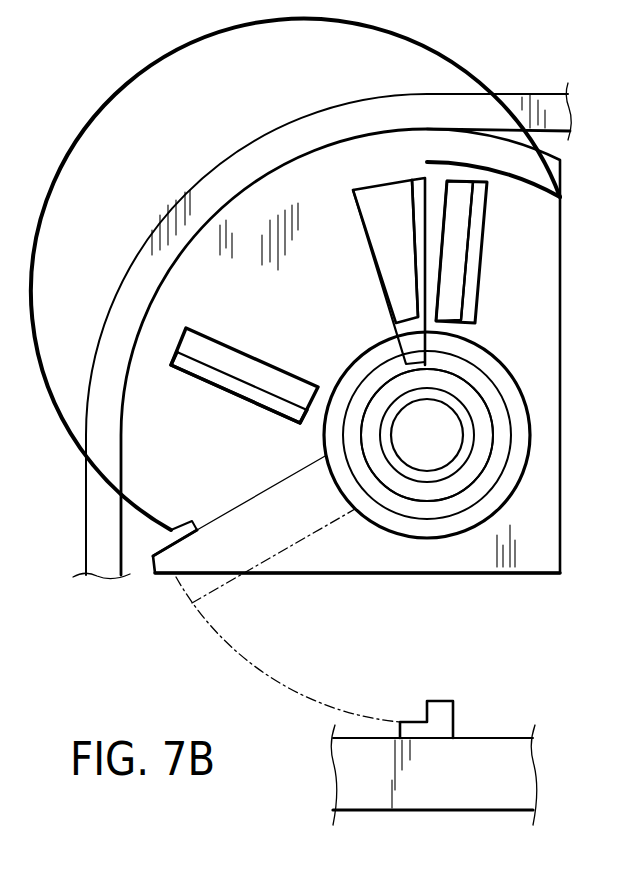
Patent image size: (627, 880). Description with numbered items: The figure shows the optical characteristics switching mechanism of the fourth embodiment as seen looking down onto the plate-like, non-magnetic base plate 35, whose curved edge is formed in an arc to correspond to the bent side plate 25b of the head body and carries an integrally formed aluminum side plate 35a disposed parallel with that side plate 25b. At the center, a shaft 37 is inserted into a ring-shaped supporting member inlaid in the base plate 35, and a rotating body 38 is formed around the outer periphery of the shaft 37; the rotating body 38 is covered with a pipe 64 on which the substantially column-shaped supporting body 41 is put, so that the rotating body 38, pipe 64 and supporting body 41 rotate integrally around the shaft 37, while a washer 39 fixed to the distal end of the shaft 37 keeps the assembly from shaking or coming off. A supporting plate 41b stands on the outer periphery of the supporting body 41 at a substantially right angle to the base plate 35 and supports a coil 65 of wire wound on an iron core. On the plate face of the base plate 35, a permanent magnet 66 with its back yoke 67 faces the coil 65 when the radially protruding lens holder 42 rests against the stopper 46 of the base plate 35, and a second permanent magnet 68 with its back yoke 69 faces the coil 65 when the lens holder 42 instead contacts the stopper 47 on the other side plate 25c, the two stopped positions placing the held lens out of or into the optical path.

The side plate 25b is at (393, 107).
The other side plate 25c is at (453, 788).
The base plate 35 is at (540, 313).
The side plate 35a is at (545, 170).
The shaft 37 is at (447, 430).
The rotating body 38 is at (472, 470).
The washer 39 is at (467, 447).
The supporting body 41 is at (510, 398).
The supporting plate 41b is at (418, 178).
The lens holder 42 is at (233, 583).
The stopper 46 is at (188, 525).
The stopper 47 is at (443, 722).
The pipe 64 is at (452, 503).
The coil 65 is at (393, 257).
The permanent magnet 66 is at (460, 187).
The back yoke 67 is at (473, 260).
The permanent magnet 68 is at (242, 368).
The back yoke 69 is at (225, 378).